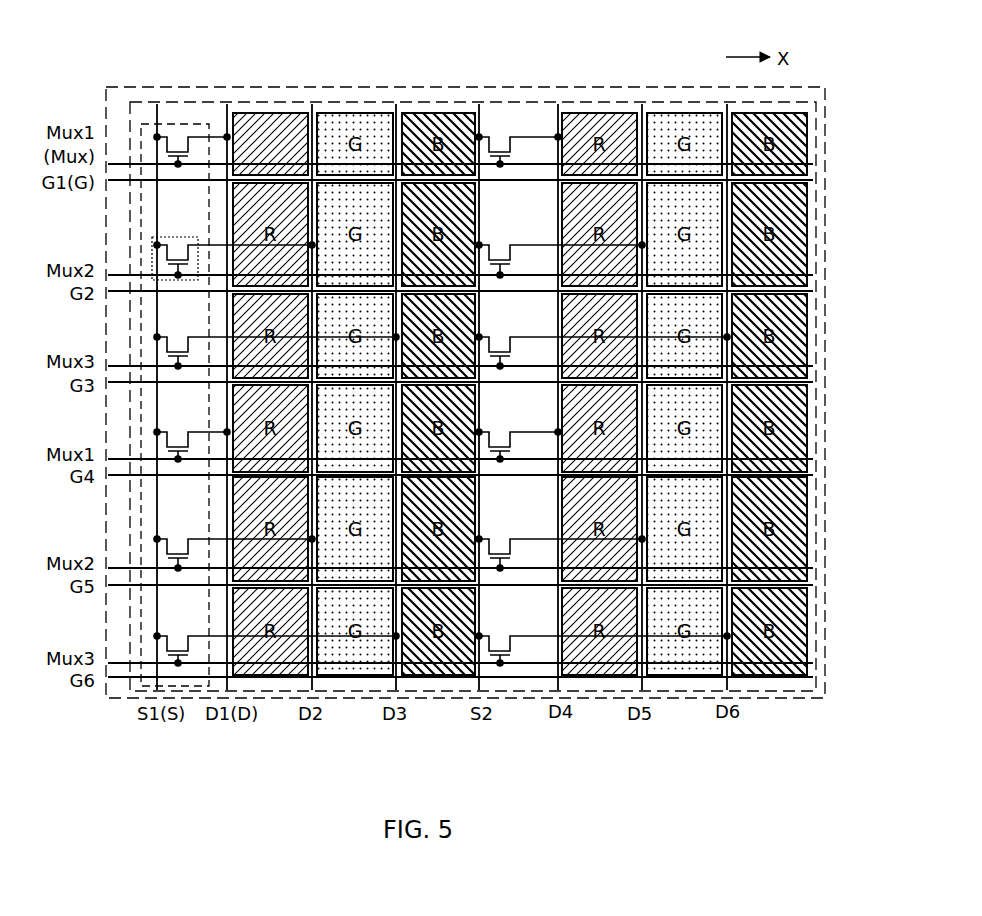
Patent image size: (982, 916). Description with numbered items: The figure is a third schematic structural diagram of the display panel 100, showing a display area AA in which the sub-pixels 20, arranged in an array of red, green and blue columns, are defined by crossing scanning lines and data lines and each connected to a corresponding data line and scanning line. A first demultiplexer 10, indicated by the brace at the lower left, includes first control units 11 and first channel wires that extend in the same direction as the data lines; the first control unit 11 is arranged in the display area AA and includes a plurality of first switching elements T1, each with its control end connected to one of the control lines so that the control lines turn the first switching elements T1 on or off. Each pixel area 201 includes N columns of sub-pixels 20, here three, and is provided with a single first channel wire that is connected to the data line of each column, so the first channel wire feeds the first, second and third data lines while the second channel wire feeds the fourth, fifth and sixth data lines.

The display panel 100 is at (170, 50).
The first demultiplexer 10 is at (233, 452).
The first control unit 11 is at (233, 431).
The sub-pixel 20 is at (270, 118).
The pixel area 201 is at (505, 100).
The display area AA is at (381, 100).
The first switching element T1 is at (150, 249).